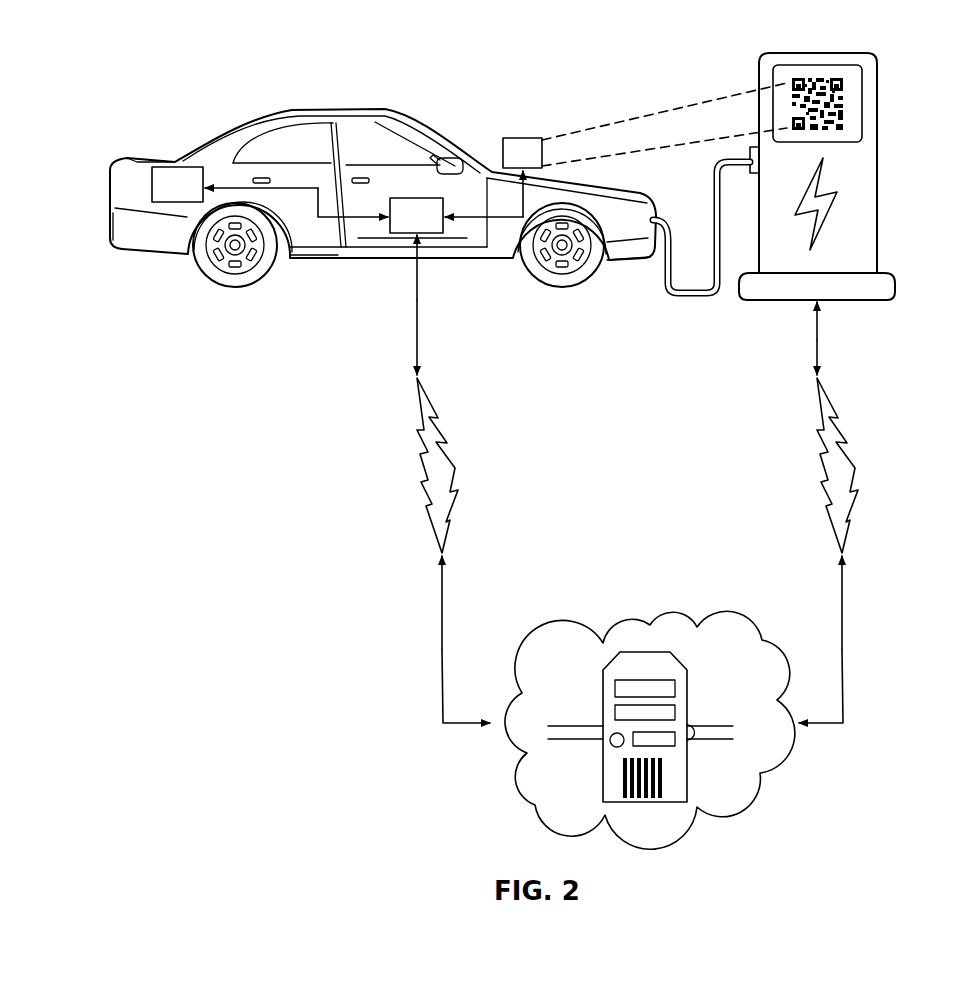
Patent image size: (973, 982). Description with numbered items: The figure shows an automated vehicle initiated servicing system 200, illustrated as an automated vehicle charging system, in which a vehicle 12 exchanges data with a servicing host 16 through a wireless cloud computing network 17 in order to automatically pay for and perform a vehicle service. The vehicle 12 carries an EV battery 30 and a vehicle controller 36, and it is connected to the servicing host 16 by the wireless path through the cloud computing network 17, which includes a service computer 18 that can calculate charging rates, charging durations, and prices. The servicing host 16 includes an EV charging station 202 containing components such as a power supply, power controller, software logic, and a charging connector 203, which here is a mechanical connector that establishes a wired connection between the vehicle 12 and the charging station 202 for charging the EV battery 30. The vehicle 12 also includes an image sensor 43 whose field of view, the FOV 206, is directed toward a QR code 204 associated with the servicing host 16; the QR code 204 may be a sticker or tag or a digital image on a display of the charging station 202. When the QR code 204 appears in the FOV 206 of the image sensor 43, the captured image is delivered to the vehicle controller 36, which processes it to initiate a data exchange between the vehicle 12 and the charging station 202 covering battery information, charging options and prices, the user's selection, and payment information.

The automated vehicle initiated servicing system 200 is at (180, 54).
The vehicle 12 is at (118, 177).
The servicing host 16 is at (873, 50).
The cloud computing network 17 is at (563, 622).
The service computer 18 is at (678, 688).
The EV battery 30 is at (192, 198).
The vehicle controller 36 is at (430, 230).
The image sensor 43 is at (510, 140).
The EV charging station 202 is at (855, 190).
The charging connector 203 is at (683, 300).
The QR code 204 is at (845, 98).
The FOV 206 is at (648, 113).